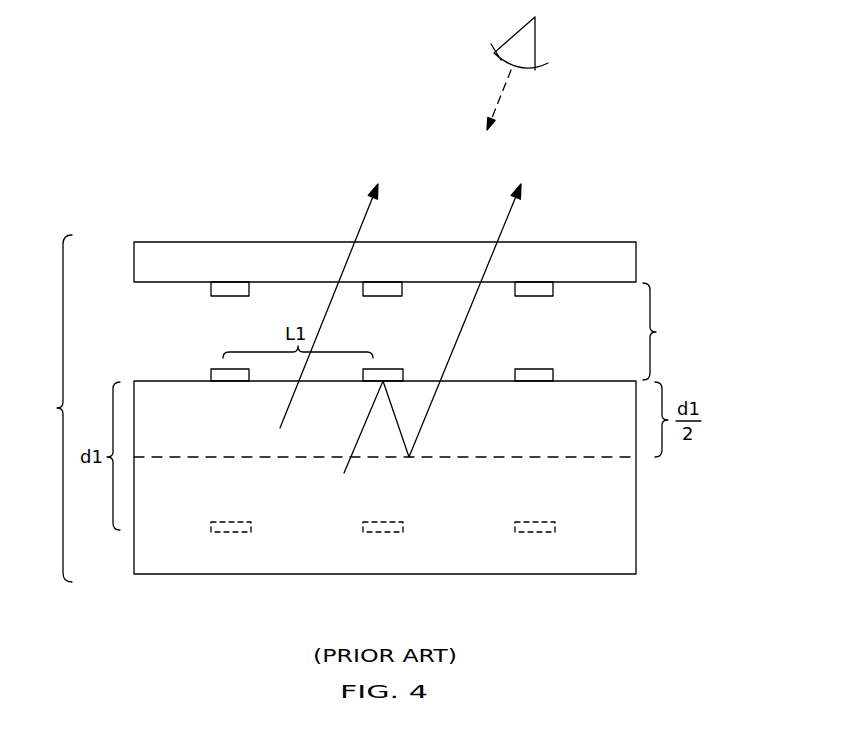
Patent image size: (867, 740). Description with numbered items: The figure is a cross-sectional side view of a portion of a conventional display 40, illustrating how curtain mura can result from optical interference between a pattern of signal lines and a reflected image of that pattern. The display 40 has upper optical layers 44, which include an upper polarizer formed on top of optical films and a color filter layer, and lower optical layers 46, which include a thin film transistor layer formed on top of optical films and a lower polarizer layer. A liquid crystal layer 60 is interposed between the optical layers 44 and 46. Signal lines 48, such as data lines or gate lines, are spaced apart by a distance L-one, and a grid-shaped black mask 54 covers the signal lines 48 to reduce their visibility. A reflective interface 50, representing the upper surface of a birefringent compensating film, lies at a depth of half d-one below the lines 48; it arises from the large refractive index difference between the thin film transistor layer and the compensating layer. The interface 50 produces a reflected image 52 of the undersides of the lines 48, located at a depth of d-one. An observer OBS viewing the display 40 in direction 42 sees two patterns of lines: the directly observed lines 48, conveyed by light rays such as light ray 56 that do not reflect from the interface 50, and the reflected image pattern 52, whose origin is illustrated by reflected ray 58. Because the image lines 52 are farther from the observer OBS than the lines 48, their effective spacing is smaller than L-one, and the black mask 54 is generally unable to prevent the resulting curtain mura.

The display 40 is at (50, 408).
The direction 42 is at (506, 97).
The upper optical layers 44 is at (627, 259).
The lower optical layers 46 is at (627, 509).
The signal lines 48 is at (216, 370).
The reflective interface 50 is at (504, 457).
The reflected image 52 is at (230, 533).
The black mask 54 is at (224, 297).
The light ray 56 is at (368, 212).
The reflected ray 58 is at (510, 212).
The liquid crystal layer 60 is at (663, 331).
The observer OBS is at (539, 43).